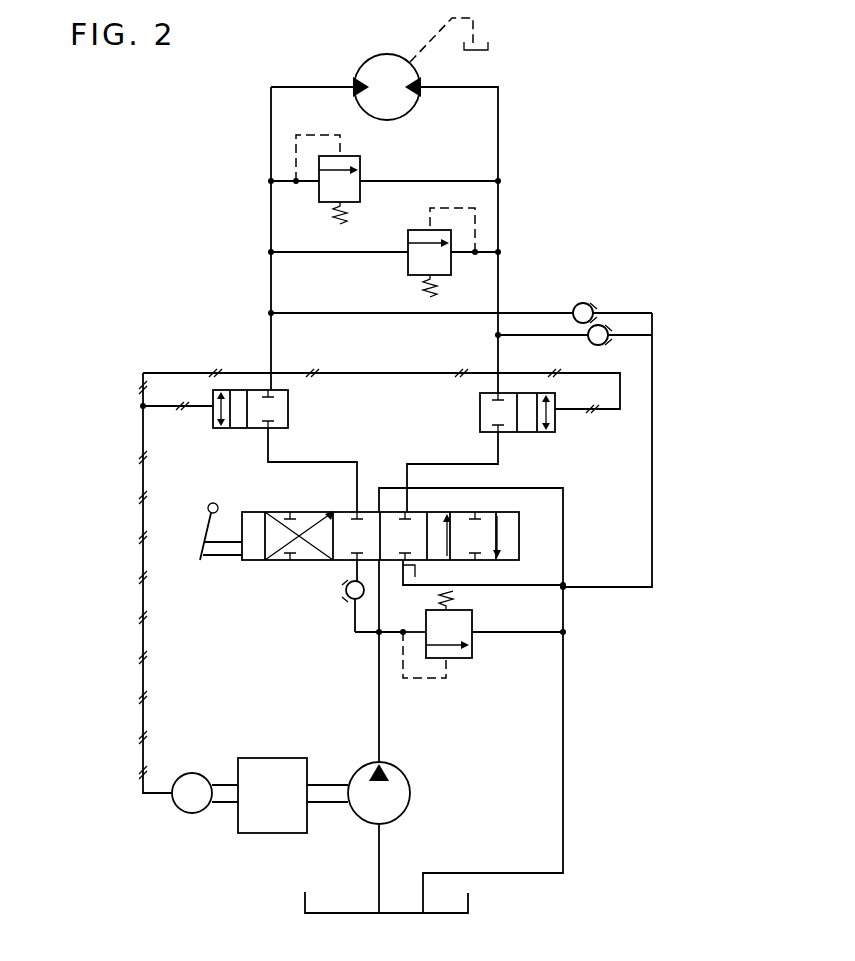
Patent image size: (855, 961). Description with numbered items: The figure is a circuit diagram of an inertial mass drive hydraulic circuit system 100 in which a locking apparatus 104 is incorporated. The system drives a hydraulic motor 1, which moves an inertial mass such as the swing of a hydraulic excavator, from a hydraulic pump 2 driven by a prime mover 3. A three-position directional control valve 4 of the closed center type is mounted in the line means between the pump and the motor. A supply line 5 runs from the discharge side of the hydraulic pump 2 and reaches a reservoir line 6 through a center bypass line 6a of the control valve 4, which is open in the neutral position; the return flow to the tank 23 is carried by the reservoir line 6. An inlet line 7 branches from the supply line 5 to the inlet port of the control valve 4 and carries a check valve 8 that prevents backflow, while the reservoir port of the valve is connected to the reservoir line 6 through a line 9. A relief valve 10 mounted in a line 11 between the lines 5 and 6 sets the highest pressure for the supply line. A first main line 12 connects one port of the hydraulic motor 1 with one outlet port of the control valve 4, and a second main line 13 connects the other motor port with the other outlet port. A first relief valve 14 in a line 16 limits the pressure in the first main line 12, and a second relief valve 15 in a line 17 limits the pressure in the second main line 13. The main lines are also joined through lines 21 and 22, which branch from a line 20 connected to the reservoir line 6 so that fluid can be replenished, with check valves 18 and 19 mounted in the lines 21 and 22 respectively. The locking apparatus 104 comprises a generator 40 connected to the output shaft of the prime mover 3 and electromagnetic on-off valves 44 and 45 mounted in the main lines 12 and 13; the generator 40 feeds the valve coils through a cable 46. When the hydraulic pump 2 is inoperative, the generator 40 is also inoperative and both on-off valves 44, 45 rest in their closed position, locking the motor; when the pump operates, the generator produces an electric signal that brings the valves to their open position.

The hydraulic motor 1 is at (361, 65).
The inertial mass drive hydraulic circuit system 100 is at (525, 103).
The first main line 12 is at (271, 138).
The second main line 13 is at (498, 157).
The first relief valve 14 is at (362, 158).
The second relief valve 15 is at (452, 262).
The line 16 is at (432, 180).
The line 17 is at (338, 252).
The check valve 18 is at (590, 305).
The check valve 19 is at (606, 342).
The line 21 is at (530, 313).
The line 22 is at (520, 337).
The line 20 is at (652, 535).
The locking apparatus 104 is at (125, 405).
The electromagnetic on-off valve 44 is at (210, 418).
The electromagnetic on-off valve 45 is at (555, 418).
The cable 46 is at (385, 399).
The three-position directional control valve 4 is at (262, 510).
The check valve 8 is at (347, 593).
The center bypass line 6a is at (382, 580).
The inlet line 7 is at (355, 622).
The line 9 is at (517, 587).
The relief valve 10 is at (472, 648).
The line 11 is at (517, 634).
The supply line 5 is at (379, 701).
The reservoir line 6 is at (563, 700).
The generator 40 is at (197, 772).
The prime mover 3 is at (268, 757).
The hydraulic pump 2 is at (411, 790).
The tank 23 is at (470, 903).